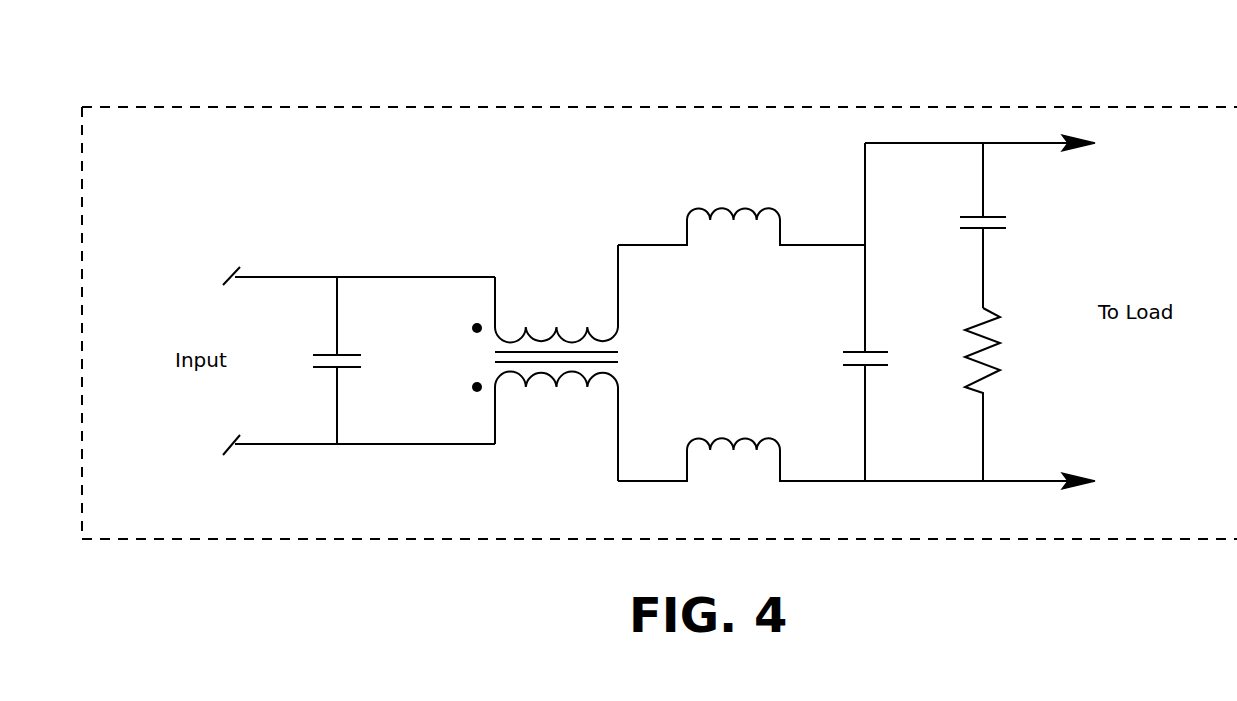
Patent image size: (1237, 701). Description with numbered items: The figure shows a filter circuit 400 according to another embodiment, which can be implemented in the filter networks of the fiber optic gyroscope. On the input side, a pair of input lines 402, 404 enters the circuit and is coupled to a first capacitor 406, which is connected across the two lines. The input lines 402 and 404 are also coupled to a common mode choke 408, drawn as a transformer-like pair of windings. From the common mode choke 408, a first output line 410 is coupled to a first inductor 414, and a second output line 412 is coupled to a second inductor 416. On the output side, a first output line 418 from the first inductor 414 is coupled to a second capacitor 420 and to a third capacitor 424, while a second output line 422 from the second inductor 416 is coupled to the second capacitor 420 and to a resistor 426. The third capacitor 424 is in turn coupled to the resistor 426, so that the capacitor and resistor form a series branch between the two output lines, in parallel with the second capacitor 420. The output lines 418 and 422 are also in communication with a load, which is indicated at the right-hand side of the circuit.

The filter circuit 400 is at (725, 107).
The input line 402 is at (248, 276).
The input line 404 is at (264, 446).
The first capacitor 406 is at (345, 355).
The common mode choke 408 is at (495, 297).
The first output line 410 is at (633, 243).
The second output line 412 is at (658, 483).
The first inductor 414 is at (780, 227).
The second inductor 416 is at (781, 457).
The first output line 418 is at (825, 247).
The second capacitor 420 is at (873, 351).
The second output line 422 is at (813, 483).
The third capacitor 424 is at (990, 215).
The resistor 426 is at (988, 380).